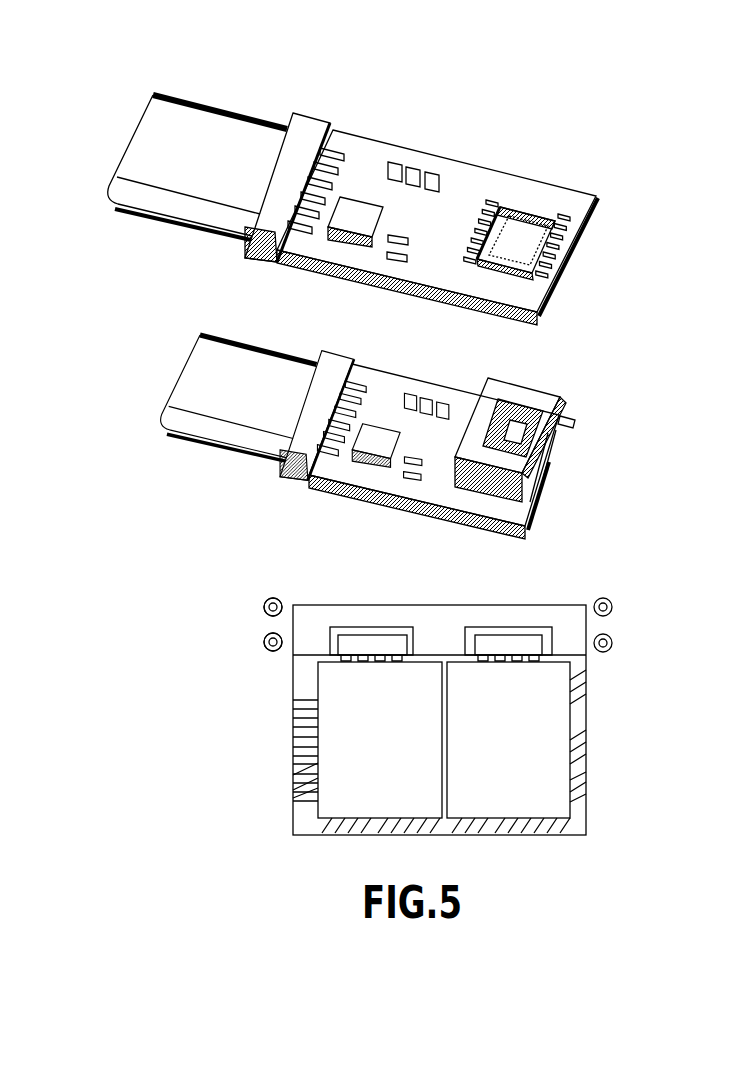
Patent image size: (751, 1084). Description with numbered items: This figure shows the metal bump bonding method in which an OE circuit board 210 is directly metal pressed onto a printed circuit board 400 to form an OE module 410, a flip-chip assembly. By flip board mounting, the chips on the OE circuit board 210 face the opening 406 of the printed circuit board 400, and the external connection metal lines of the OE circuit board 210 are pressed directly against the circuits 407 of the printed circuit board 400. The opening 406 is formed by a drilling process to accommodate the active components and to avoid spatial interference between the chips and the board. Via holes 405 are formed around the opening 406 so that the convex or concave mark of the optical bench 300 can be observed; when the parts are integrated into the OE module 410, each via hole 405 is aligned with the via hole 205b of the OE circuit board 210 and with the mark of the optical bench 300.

The printed circuit board 400 is at (350, 160).
The via hole 405 is at (560, 213).
The opening 406 is at (507, 253).
The circuits 407 is at (487, 205).
The optical bench 300 is at (538, 398).
The OE module 410 is at (389, 504).
The OE circuit board 210 is at (584, 711).
The via hole 205b is at (270, 608).